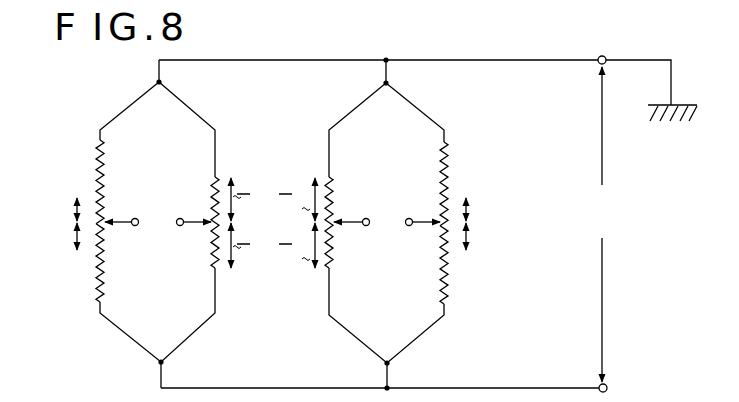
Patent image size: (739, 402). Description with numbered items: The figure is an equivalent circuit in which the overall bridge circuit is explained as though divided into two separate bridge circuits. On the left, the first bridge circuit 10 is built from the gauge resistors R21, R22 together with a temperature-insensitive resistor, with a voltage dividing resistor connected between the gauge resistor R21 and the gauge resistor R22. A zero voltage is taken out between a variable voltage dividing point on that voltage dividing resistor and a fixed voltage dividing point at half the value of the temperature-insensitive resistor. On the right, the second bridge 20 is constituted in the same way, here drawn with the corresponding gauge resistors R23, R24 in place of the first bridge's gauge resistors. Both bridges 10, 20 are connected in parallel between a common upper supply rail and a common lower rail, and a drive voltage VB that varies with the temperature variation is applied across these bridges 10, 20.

The first bridge circuit 10 is at (161, 220).
The second bridge 20 is at (436, 220).
The gauge resistor R21 is at (108, 166).
The gauge resistor R22 is at (108, 299).
The resistor R23 (upper portion of second bridge potentiometer) R23 is at (454, 168).
The resistor R24 (lower portion of second bridge potentiometer) R24 is at (454, 299).
The bridge supply voltage VB is at (606, 224).